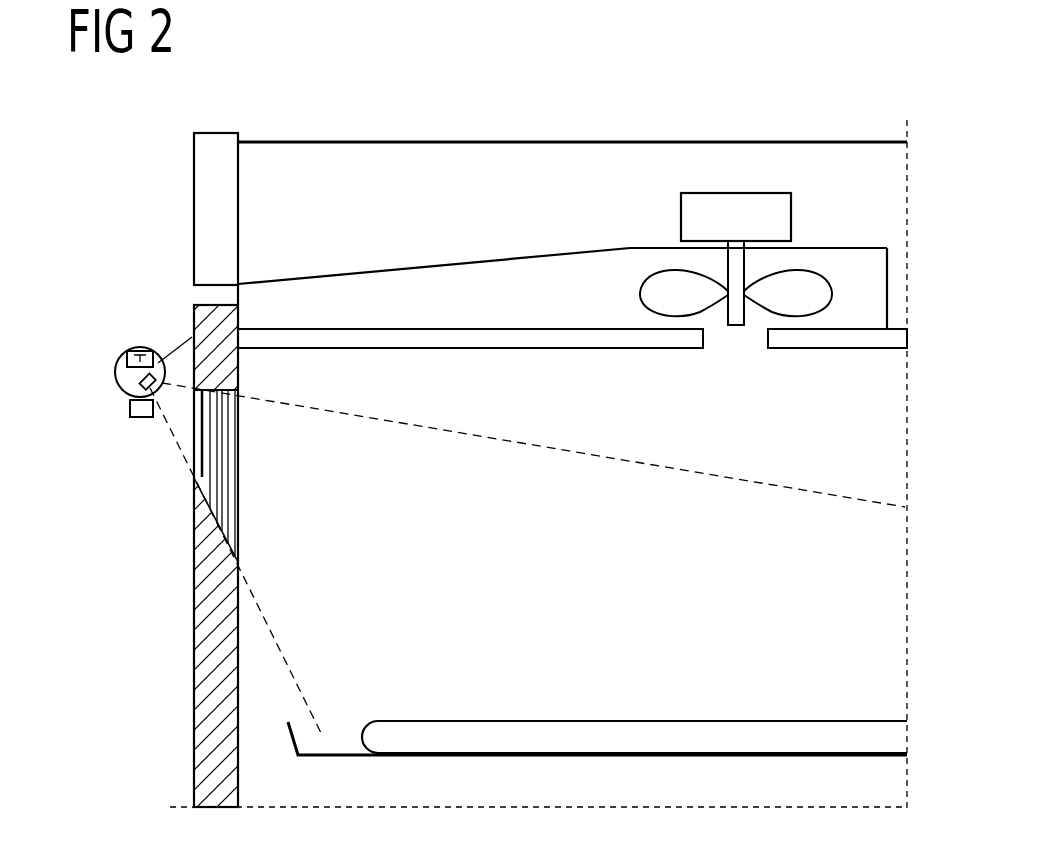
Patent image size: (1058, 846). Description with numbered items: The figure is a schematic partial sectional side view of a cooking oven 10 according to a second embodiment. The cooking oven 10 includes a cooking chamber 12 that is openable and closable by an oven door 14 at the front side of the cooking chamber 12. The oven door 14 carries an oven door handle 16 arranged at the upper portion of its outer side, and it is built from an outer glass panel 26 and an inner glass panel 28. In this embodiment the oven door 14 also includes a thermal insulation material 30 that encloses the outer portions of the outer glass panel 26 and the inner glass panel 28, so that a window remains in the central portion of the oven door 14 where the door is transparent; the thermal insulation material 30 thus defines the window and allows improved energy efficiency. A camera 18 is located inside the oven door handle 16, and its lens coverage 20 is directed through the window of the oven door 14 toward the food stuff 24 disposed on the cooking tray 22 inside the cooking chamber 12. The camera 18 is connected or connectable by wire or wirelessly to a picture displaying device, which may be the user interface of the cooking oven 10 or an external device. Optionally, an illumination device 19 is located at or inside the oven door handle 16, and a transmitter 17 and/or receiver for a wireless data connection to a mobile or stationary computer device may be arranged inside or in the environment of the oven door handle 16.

The cooking oven 10 is at (774, 92).
The cooking chamber 12 is at (563, 586).
The oven door 14 is at (193, 750).
The oven door handle 16 is at (119, 392).
The transmitter 17 is at (133, 350).
The camera 18 is at (116, 370).
The illumination device 19 is at (133, 415).
The lens coverage 20 is at (350, 416).
The cooking tray 22 is at (338, 752).
The food stuff 24 is at (650, 735).
The outer glass panel 26 is at (205, 450).
The inner glass panel 28 is at (225, 433).
The thermal insulation material 30 is at (212, 337).